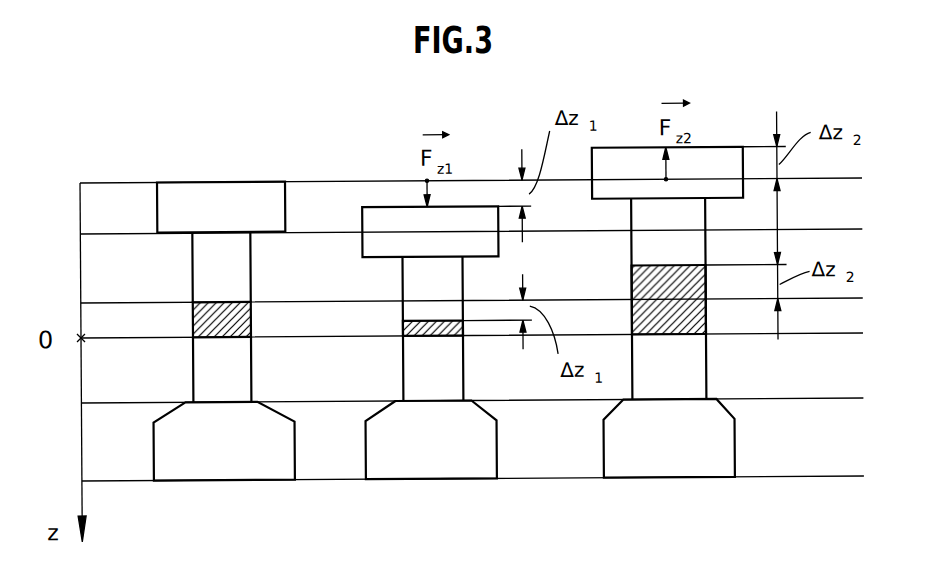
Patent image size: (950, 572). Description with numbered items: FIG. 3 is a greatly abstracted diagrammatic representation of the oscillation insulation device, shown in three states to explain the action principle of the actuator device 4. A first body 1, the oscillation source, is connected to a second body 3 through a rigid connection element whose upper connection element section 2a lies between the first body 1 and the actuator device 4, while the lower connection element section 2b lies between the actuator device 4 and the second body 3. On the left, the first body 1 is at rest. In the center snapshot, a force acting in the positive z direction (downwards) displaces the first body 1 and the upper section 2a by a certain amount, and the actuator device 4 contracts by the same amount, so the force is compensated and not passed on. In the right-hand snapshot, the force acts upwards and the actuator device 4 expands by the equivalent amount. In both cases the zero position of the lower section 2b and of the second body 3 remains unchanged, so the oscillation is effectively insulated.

The first body 1 is at (170, 210).
The upper connection element section 2a is at (200, 268).
The lower connection element section 2b is at (201, 372).
The second body 3 is at (170, 455).
The actuator device 4 is at (195, 321).